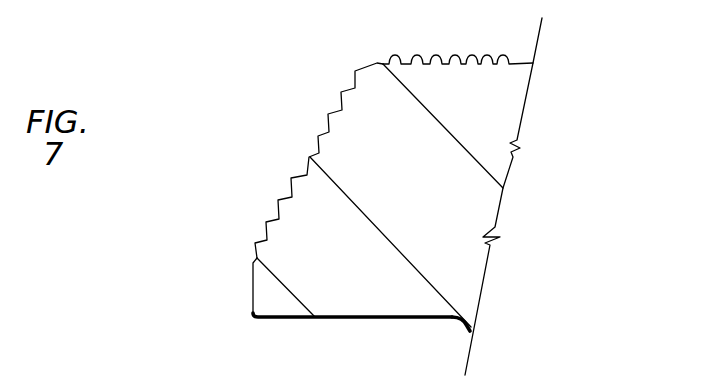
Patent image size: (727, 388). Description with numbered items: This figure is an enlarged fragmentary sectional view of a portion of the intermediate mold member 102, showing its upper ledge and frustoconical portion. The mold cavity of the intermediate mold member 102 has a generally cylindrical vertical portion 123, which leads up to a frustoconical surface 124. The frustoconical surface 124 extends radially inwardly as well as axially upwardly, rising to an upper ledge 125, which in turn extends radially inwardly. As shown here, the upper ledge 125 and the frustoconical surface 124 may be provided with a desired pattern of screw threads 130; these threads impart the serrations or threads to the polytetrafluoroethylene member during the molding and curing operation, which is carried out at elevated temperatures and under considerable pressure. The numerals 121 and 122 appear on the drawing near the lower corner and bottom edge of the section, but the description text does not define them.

The intermediate mold member 102 is at (449, 188).
The rounded corner 121 is at (462, 342).
The bottom edge 122 is at (315, 317).
The generally cylindrical vertical portion 123 is at (251, 290).
The frustoconical surface 124 is at (256, 257).
The upper ledge 125 is at (377, 63).
The screw threads 130 is at (310, 157).